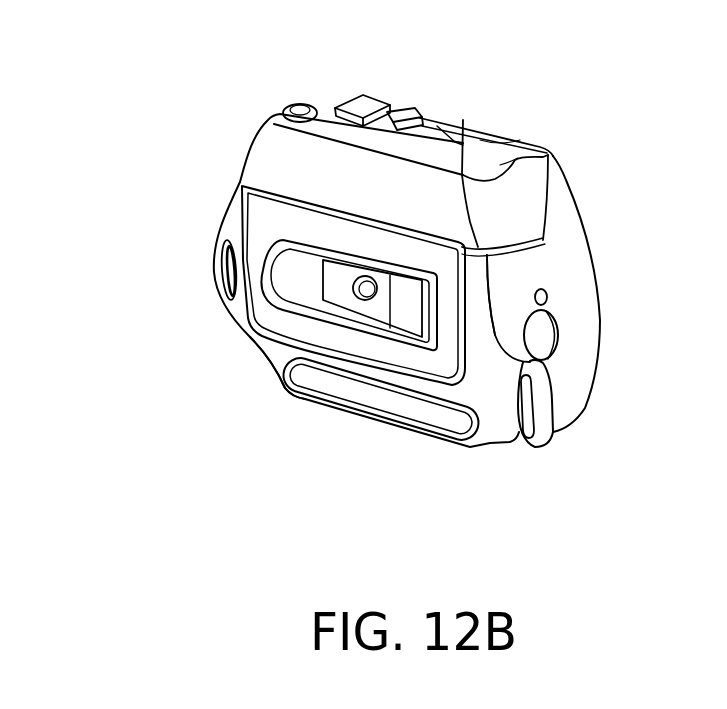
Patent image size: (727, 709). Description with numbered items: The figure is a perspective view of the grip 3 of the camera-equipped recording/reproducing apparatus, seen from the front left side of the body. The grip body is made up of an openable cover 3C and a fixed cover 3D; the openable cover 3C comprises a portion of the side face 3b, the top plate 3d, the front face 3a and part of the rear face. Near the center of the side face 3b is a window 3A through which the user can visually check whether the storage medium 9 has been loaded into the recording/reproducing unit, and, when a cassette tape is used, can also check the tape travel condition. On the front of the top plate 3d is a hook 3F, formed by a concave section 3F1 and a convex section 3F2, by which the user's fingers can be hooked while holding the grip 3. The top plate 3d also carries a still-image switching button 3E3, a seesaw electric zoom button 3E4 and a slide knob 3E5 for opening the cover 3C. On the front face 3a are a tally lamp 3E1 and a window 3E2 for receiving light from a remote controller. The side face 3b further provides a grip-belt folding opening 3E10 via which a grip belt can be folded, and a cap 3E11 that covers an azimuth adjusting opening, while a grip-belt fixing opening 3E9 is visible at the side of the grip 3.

The grip 3 is at (369, 431).
The window 3A is at (282, 362).
The front face 3a is at (571, 257).
The side face 3b is at (280, 378).
The openable cover 3C is at (256, 220).
The top plate 3d is at (463, 135).
The fixed cover 3D is at (571, 195).
The tally lamp 3E1 is at (548, 297).
The window for receiving light from a remote controller 3E2 is at (559, 340).
The still-image switching button 3E3 is at (285, 103).
The seesaw electric zoom button 3E4 is at (358, 102).
The slide knob 3E5 is at (440, 108).
The grip-belt fixing opening 3E9 is at (223, 267).
The grip-belt folding opening 3E10 is at (519, 447).
The cap 3E11 is at (418, 413).
The hook 3F is at (586, 50).
The concave section 3F1 is at (515, 144).
The convex section 3F2 is at (477, 142).
The storage medium 9 is at (330, 283).